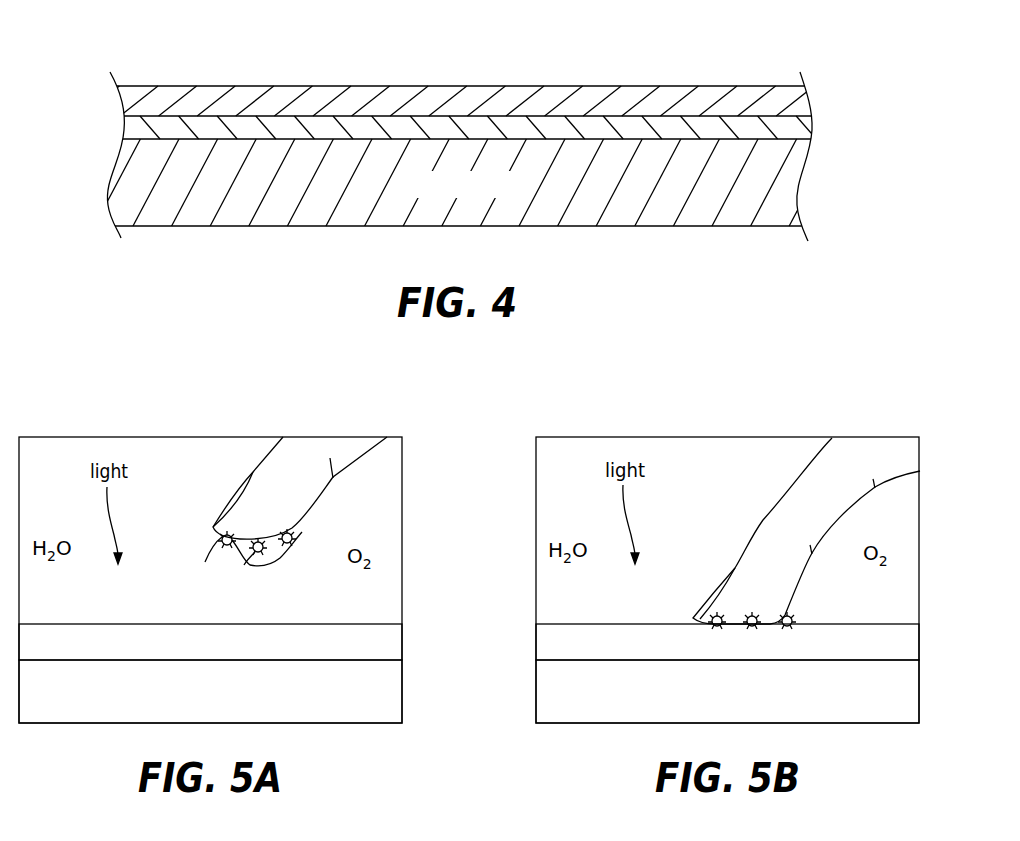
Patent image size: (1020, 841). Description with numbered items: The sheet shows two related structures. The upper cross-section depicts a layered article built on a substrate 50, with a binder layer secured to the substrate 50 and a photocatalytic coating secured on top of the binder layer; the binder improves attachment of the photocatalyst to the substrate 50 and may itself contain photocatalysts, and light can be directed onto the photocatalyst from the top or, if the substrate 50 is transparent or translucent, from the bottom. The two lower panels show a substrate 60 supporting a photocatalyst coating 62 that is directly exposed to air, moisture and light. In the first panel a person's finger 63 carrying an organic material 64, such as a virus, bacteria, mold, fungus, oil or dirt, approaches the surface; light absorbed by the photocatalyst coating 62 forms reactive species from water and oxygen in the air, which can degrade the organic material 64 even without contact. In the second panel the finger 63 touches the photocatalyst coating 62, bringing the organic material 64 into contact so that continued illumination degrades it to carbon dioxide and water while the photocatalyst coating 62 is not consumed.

In FIG. 4, the substrate 50 is at (522, 195).
In FIG. 5A, the person's finger 63 is at (300, 485).
In FIG. 5B, the person's finger 63 is at (826, 513).
In FIG. 5A, the organic material 64 is at (205, 562).
In FIG. 5B, the organic material 64 is at (790, 622).
In FIG. 5A, the photocatalyst coating 62 is at (140, 653).
In FIG. 5B, the photocatalyst coating 62 is at (656, 653).
In FIG. 5A, the substrate 60 is at (275, 703).
In FIG. 5B, the substrate 60 is at (789, 703).